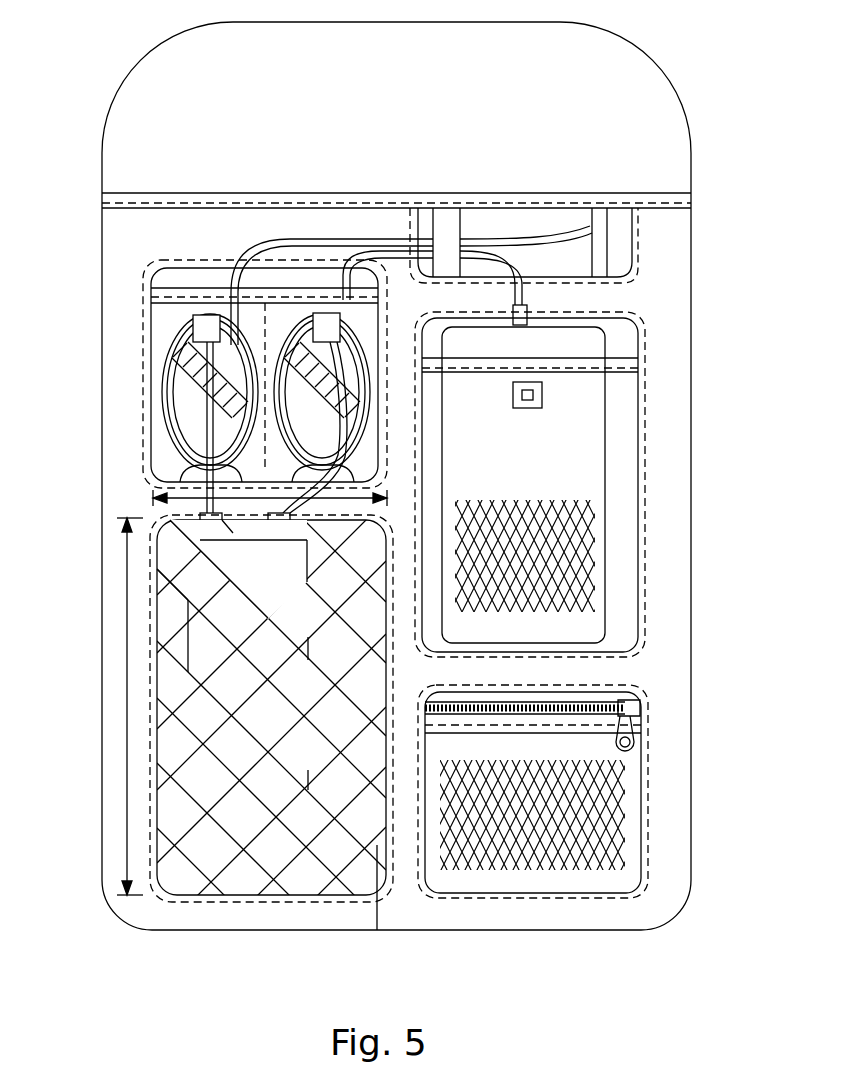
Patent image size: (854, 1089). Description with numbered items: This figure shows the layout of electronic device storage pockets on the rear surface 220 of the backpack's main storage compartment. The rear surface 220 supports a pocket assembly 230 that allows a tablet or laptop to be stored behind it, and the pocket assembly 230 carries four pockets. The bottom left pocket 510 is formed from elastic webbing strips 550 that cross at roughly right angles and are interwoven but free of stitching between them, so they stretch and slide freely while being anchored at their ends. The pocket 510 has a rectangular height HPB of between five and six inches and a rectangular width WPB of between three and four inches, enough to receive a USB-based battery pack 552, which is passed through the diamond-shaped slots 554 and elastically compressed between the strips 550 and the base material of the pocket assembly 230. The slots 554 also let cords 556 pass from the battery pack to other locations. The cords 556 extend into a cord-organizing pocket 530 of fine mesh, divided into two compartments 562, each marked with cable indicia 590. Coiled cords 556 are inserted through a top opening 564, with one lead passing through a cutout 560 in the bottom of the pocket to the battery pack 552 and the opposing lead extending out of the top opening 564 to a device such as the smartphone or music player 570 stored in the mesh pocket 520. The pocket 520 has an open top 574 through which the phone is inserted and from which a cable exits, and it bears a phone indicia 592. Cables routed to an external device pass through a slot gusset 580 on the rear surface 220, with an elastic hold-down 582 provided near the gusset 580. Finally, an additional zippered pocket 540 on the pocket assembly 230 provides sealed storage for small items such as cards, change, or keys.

The rear surface 220 is at (622, 105).
The pocket assembly 230 is at (658, 268).
The slot gusset 580 is at (600, 228).
The elastic hold-down 582 is at (442, 218).
The open top 574 is at (539, 340).
The smartphone/music player 570 is at (590, 345).
The phone indicia 592 is at (536, 391).
The pocket 520 is at (582, 480).
The rectangular width WPB is at (398, 482).
The cord/cable-organizing pocket 530 is at (208, 327).
The compartments 562 is at (183, 280).
The top opening 564 is at (207, 297).
The cable indicia 590 is at (313, 325).
The cutouts 560 is at (270, 483).
The cords/cables 556 is at (225, 484).
The pocket 510 is at (212, 711).
The rectangular height HPB is at (128, 720).
The elastic webbing strips 550 is at (271, 711).
The battery pack 552 is at (207, 645).
The diamond-shaped slots 554 is at (150, 955).
The zippered pocket 540 is at (426, 908).